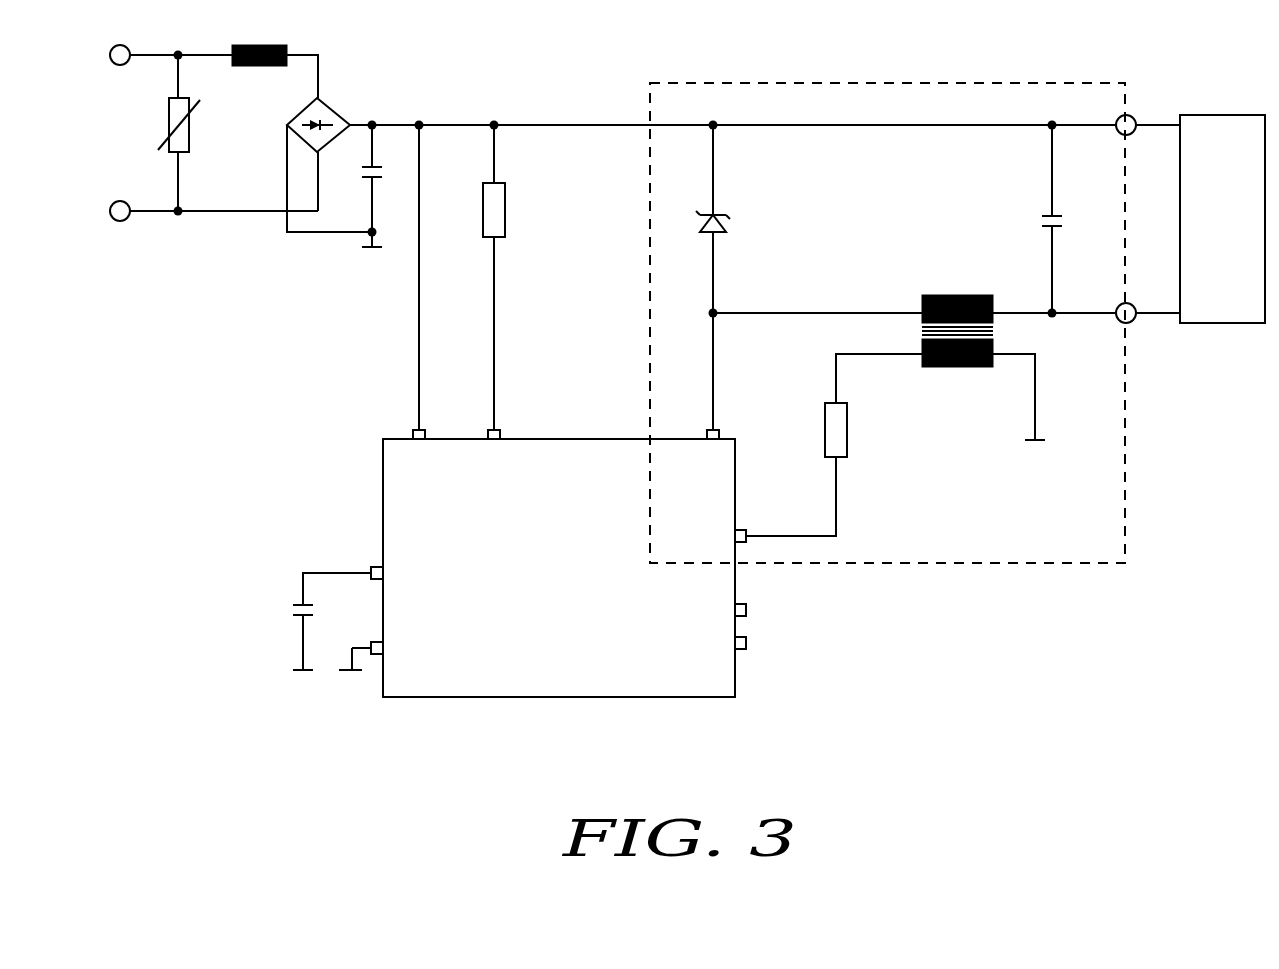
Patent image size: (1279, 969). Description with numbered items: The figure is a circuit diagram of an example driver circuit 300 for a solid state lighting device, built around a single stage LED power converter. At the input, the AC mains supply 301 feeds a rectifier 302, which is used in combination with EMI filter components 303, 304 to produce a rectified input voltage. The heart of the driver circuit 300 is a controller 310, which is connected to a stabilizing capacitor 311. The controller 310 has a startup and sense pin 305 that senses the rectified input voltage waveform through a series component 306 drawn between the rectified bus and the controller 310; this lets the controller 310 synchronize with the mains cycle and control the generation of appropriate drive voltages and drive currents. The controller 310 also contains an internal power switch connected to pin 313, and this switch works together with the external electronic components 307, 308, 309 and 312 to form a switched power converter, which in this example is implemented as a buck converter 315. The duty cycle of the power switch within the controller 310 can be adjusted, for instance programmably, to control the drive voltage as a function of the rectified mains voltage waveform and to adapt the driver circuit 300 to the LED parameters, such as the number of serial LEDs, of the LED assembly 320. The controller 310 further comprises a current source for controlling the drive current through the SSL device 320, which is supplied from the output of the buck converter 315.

The driver circuit 300 is at (233, 458).
The AC mains supply 301 is at (160, 134).
The rectifier 302 is at (334, 108).
The EMI filter component 303 is at (268, 67).
The EMI filter component 304 is at (362, 180).
The startup and sense pin 305 is at (418, 347).
The resistor 306 is at (505, 207).
The external electronic component 307 is at (728, 232).
The external electronic component 308 is at (1042, 219).
The external electronic component 309 is at (935, 295).
The controller 310 is at (382, 468).
The stabilizing capacitor 311 is at (302, 617).
The external electronic component 312 is at (847, 435).
The power switch pin 313 is at (710, 431).
The buck converter 315 is at (1126, 498).
The LED assembly 320 is at (1230, 323).